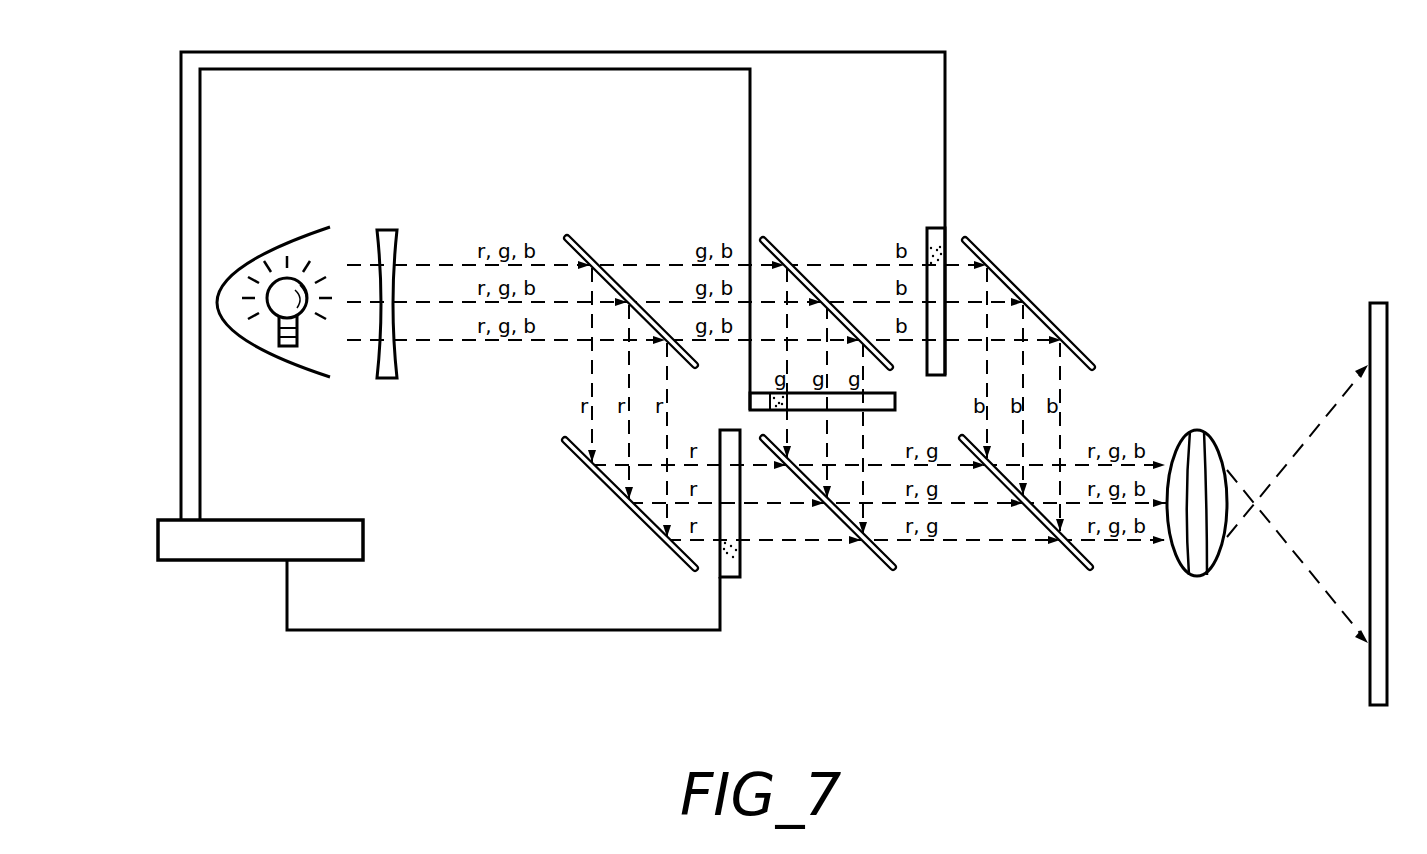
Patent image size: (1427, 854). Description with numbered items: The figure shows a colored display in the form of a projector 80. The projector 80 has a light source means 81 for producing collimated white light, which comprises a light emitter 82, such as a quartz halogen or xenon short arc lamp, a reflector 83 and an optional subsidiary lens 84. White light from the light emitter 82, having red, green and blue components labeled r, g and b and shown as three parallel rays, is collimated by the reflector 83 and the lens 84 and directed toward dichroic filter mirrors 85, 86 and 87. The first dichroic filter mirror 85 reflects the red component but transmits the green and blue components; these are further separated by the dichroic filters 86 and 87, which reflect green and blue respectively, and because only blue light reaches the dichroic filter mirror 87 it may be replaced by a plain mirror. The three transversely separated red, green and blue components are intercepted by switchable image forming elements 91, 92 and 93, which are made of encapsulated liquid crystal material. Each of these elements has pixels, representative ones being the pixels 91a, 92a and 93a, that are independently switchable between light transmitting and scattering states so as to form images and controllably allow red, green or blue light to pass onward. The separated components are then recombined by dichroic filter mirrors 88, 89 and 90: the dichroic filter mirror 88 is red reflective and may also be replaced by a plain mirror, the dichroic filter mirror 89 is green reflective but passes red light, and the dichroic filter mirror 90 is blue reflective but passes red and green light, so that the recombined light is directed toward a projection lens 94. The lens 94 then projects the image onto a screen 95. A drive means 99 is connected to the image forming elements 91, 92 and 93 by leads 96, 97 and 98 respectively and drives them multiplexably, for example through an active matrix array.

The projector 80 is at (1292, 205).
The light source means 81 is at (328, 299).
The light emitter 82 is at (312, 292).
The reflector 83 is at (286, 228).
The subsidiary lens 84 is at (391, 380).
The first dichroic filter mirror 85 is at (585, 236).
The dichroic filter mirror 86 is at (782, 242).
The dichroic filter mirror 87 is at (1050, 318).
The dichroic filter mirror 88 is at (645, 528).
The dichroic filter mirror 89 is at (900, 572).
The dichroic filter mirror 90 is at (1092, 572).
The switchable image forming element 91 is at (801, 571).
The pixel 91a is at (745, 550).
The switchable image forming element 92 is at (813, 408).
The pixel 92a is at (778, 412).
The switchable image forming element 93 is at (945, 282).
The pixel 93a is at (928, 255).
The projection lens 94 is at (1200, 430).
The screen 95 is at (1374, 677).
The lead 96 is at (440, 632).
The lead 97 is at (750, 158).
The lead 98 is at (945, 155).
The drive means 99 is at (228, 548).